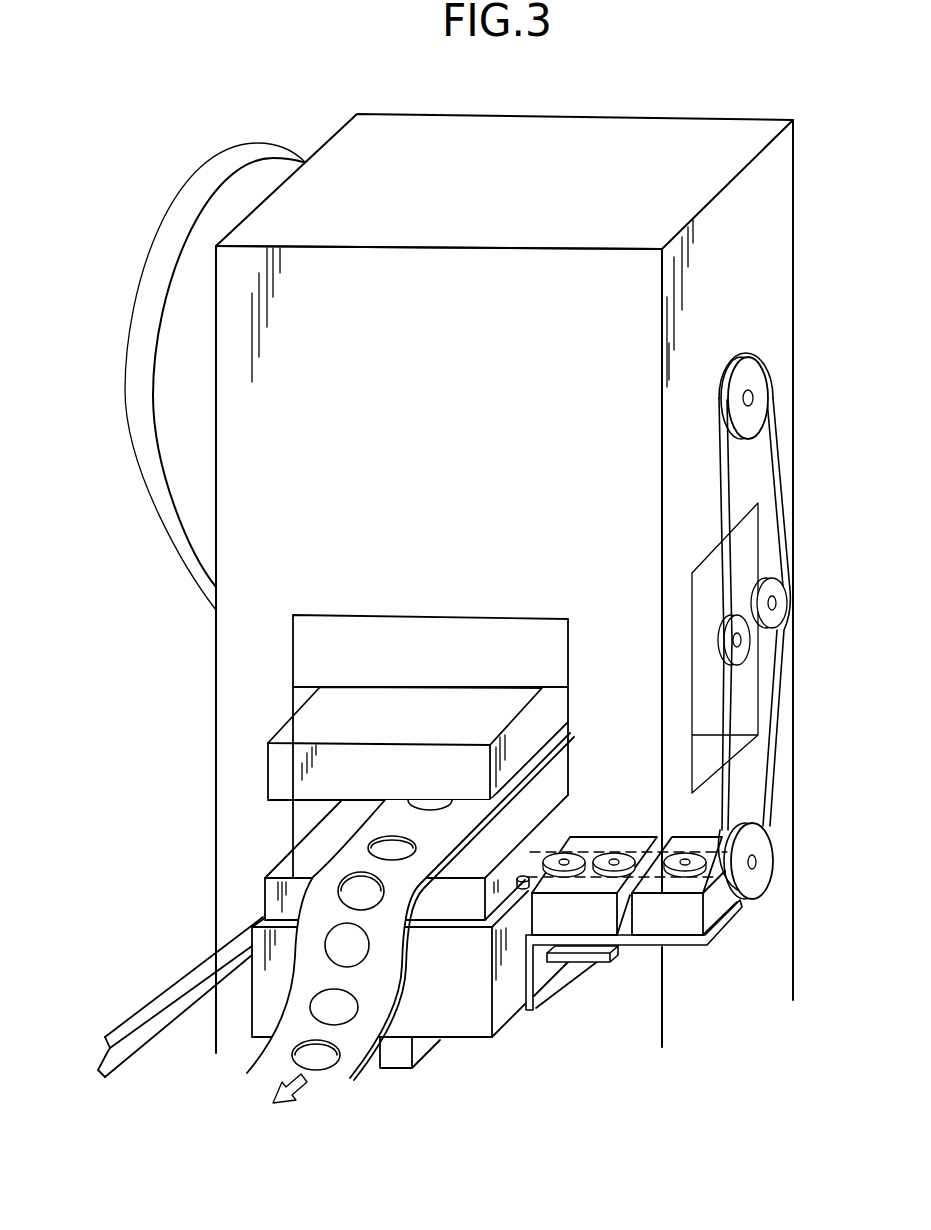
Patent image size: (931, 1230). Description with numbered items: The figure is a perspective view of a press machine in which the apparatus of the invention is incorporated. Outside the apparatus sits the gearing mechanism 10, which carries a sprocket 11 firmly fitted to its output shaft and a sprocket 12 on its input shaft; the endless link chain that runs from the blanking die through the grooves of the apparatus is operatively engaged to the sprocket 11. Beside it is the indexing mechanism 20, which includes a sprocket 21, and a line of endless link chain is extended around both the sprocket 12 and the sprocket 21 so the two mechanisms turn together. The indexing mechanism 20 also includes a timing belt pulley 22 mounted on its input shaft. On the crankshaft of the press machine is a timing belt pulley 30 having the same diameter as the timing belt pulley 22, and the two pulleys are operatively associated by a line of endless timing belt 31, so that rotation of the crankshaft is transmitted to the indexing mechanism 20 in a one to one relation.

The gearing mechanism 10 is at (587, 923).
The sprocket 11 is at (577, 850).
The sprocket 12 is at (617, 850).
The indexing mechanism 20 is at (683, 923).
The sprocket 21 is at (696, 853).
The timing belt pulley 22 is at (771, 878).
The timing belt pulley 30 is at (766, 381).
The endless timing belt 31 is at (775, 760).